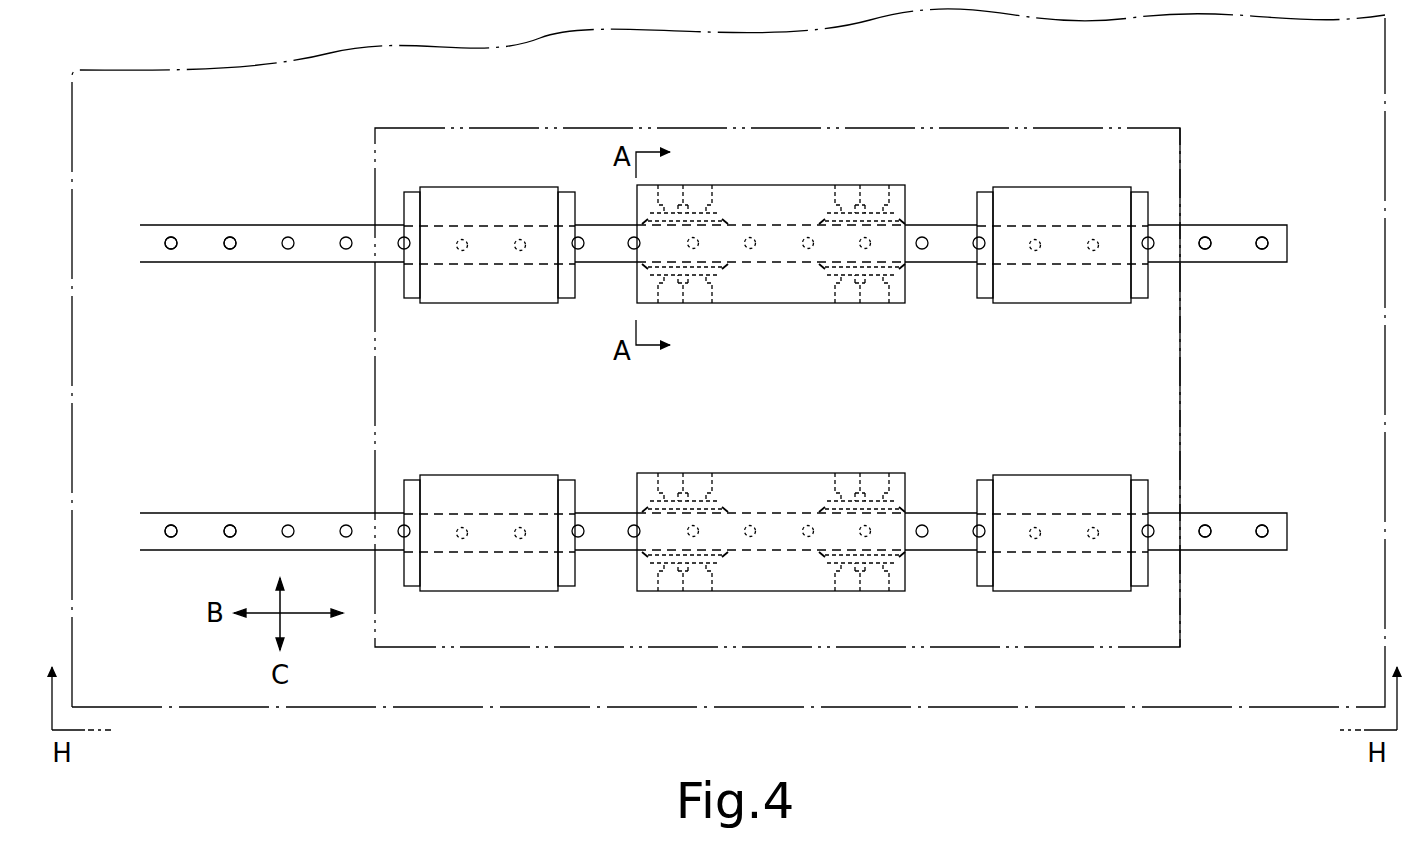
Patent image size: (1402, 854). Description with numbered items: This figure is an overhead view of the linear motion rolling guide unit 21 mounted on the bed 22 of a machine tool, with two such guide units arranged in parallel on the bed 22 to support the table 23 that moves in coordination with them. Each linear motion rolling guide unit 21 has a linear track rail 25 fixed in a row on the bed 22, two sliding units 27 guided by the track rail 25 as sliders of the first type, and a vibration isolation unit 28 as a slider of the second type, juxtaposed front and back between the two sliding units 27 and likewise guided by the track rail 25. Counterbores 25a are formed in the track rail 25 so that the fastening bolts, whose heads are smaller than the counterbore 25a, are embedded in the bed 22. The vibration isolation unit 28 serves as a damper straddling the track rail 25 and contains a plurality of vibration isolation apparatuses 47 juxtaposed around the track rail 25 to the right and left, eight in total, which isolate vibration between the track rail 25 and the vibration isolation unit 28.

The linear motion rolling guide unit 21 is at (1195, 170).
The bed 22 is at (571, 710).
The table 23 is at (1172, 348).
The track rail 25 is at (283, 221).
The counterbore 25a is at (228, 238).
The sliding unit 27 is at (487, 306).
The vibration isolation unit 28 is at (796, 306).
The vibration isolation apparatus 47 is at (700, 182).